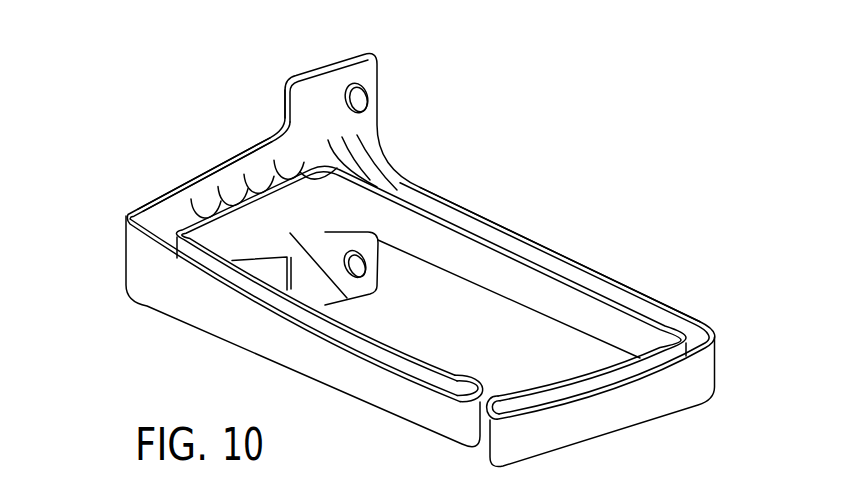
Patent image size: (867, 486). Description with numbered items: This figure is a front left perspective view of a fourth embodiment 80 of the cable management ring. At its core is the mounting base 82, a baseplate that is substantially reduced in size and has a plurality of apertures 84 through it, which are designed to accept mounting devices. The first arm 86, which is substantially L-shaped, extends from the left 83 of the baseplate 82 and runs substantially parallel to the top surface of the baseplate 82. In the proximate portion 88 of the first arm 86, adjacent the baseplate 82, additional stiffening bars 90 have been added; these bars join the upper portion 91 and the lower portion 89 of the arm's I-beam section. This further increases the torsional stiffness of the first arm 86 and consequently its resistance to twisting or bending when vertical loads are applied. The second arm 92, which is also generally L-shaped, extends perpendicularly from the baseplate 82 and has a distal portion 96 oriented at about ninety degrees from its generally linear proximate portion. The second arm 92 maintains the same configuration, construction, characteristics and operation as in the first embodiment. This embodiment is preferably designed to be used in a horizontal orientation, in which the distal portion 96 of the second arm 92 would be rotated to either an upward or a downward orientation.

The fourth embodiment 80 is at (510, 181).
The mounting base 82 is at (323, 68).
The left of the baseplate 83 is at (284, 104).
The apertures 84 is at (366, 100).
The first arm 86 is at (250, 328).
The proximate portion 88 is at (217, 167).
The lower portion 89 is at (348, 299).
The stiffening bars 90 is at (262, 160).
The upper portion 91 is at (210, 166).
The second arm 92 is at (560, 245).
The distal portion 96 is at (613, 413).